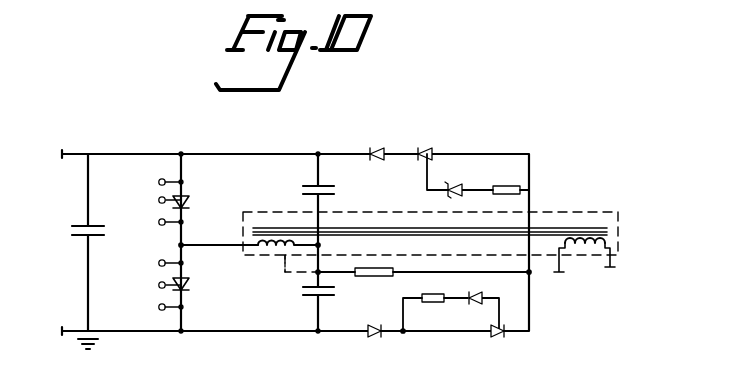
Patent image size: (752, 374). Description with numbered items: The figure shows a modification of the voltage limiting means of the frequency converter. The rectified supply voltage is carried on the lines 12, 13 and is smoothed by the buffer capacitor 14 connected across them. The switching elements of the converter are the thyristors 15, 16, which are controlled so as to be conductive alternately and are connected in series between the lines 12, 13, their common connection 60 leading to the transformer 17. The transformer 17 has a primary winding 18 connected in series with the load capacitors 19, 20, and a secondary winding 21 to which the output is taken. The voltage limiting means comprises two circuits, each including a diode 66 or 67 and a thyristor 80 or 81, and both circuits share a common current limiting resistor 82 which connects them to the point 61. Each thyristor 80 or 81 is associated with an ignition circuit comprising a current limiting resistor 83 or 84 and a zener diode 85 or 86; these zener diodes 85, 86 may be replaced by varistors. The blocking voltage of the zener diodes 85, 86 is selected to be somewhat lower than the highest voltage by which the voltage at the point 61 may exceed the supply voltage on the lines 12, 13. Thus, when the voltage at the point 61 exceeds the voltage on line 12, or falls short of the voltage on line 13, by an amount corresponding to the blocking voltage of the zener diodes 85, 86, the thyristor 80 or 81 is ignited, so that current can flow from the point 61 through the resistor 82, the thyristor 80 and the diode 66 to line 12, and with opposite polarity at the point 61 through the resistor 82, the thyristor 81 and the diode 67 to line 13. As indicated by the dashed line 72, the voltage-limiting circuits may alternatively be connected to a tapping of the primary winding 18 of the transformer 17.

The line 12 is at (126, 154).
The line 13 is at (143, 331).
The buffer capacitor 14 is at (70, 232).
The thyristor 15 is at (184, 201).
The thyristor 16 is at (187, 290).
The transformer 17 is at (551, 210).
The primary winding 18 is at (262, 249).
The load capacitor 19 is at (303, 186).
The load capacitor 20 is at (303, 295).
The secondary winding 21 is at (586, 240).
The junction node 60 is at (184, 244).
The point 61 is at (320, 243).
The diode 66 is at (380, 148).
The diode 67 is at (370, 337).
The dashed line 72 is at (283, 275).
The thyristor 80 is at (426, 148).
The thyristor 81 is at (497, 340).
The common current limiting resistor 82 is at (373, 277).
The current limiting resistor 83 is at (502, 186).
The current limiting resistor 84 is at (436, 302).
The zener diode 85 is at (458, 186).
The zener diode 86 is at (482, 296).